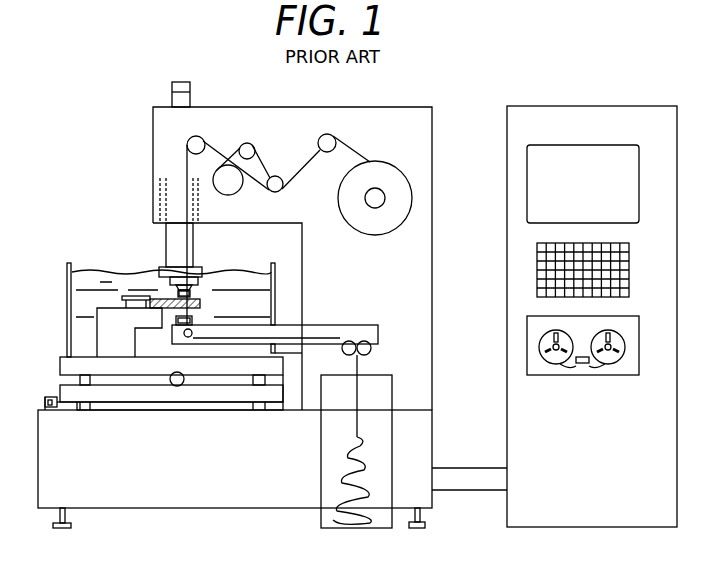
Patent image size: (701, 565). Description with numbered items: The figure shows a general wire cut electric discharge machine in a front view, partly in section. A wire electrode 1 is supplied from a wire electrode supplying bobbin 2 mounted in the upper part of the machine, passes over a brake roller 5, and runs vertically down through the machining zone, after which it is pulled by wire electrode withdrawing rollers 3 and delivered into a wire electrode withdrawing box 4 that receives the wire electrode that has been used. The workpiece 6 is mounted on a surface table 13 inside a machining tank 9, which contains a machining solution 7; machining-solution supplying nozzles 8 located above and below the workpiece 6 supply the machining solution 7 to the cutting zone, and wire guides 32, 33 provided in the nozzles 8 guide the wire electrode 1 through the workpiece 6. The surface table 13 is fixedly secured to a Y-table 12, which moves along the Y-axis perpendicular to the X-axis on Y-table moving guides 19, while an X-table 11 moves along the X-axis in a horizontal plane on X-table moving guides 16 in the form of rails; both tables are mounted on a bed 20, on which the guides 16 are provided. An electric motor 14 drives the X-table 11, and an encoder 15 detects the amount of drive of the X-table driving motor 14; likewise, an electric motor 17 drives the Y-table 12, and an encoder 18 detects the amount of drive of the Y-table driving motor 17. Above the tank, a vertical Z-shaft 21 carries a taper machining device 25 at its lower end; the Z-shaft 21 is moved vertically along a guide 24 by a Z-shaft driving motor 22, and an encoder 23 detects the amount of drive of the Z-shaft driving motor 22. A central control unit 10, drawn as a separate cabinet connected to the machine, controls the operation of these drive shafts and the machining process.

The wire electrode 1 is at (343, 146).
The wire electrode supplying bobbin 2 is at (390, 173).
The wire electrode withdrawing rollers 3 is at (372, 348).
The wire electrode withdrawing box 4 is at (383, 393).
The brake roller 5 is at (233, 188).
The workpiece 6 is at (202, 302).
The machining solution 7 is at (247, 282).
The machining-solution supplying nozzles 8 is at (197, 292).
The machining tank 9 is at (70, 277).
The central control unit 10 is at (583, 122).
The X-table 11 is at (280, 395).
The Y-table 12 is at (65, 362).
The surface table 13 is at (98, 310).
The X-table driving motor 14 is at (57, 397).
The encoder 15 is at (48, 405).
The X-table moving guides 16 is at (255, 408).
The Y-table driving motor 17 is at (187, 385).
The encoder 18 is at (173, 380).
The Y-table moving guides 19 is at (85, 382).
The bed 20 is at (170, 498).
The vertical Z-shaft 21 is at (173, 240).
The Z-shaft driving motor 22 is at (183, 100).
The encoder 23 is at (183, 85).
The guide 24 is at (158, 177).
The taper machining device 25 is at (195, 268).
The wire guide 32 is at (175, 290).
The wire guide 33 is at (170, 315).